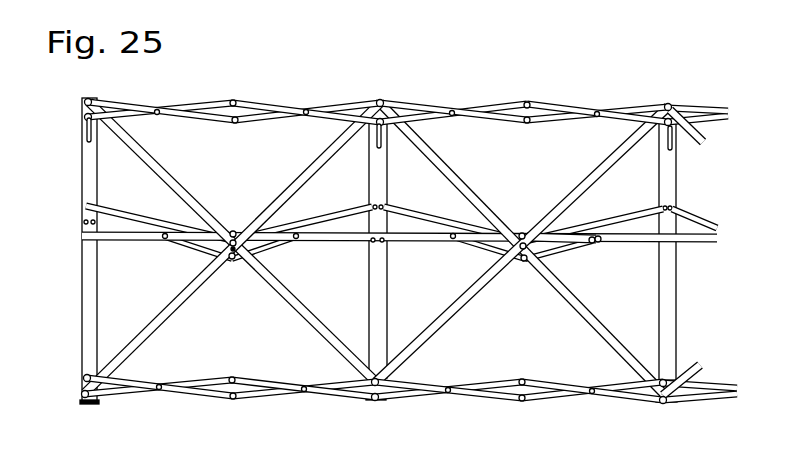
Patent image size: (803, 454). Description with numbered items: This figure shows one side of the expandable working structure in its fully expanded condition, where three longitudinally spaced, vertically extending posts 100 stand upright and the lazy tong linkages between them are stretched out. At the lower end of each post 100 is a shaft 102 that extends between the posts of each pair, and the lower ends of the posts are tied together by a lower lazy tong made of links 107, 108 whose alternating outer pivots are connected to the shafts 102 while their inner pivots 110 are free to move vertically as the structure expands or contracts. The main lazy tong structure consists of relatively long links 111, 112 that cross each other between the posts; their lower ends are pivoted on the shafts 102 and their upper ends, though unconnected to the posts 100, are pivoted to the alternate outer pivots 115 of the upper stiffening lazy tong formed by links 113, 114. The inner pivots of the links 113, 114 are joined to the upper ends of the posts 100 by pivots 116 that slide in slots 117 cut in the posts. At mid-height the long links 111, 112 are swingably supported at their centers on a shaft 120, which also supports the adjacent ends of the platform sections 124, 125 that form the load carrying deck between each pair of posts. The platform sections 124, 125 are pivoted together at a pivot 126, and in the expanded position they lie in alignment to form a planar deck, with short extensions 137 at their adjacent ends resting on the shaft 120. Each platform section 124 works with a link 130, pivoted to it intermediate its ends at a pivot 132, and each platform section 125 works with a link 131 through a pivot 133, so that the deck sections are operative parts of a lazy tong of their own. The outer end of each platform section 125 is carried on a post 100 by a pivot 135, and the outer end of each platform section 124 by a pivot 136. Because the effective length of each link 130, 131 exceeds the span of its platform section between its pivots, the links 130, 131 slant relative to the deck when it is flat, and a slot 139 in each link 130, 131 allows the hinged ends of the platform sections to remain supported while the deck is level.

The post 100 is at (82, 302).
The shaft 102 is at (89, 403).
The lazy tong link 107 is at (268, 378).
The lazy tong link 108 is at (291, 399).
The inner pivot 110 is at (231, 399).
The long link 111 is at (172, 174).
The long link 112 is at (327, 157).
The lazy tong link 113 is at (413, 105).
The lazy tong link 114 is at (483, 105).
The outer pivot 115 is at (381, 100).
The pivot 116 is at (388, 128).
The slot 117 is at (375, 141).
The shaft 120 is at (217, 276).
The platform section 124 is at (184, 229).
The platform section 125 is at (285, 233).
The pivot 126 is at (233, 229).
The link 130 is at (192, 249).
The link 131 is at (345, 214).
The pivot 132 is at (453, 241).
The pivot 133 is at (598, 243).
The pivot 135 is at (371, 245).
The pivot 136 is at (385, 247).
The extension 137 is at (500, 256).
The slot 139 is at (590, 247).